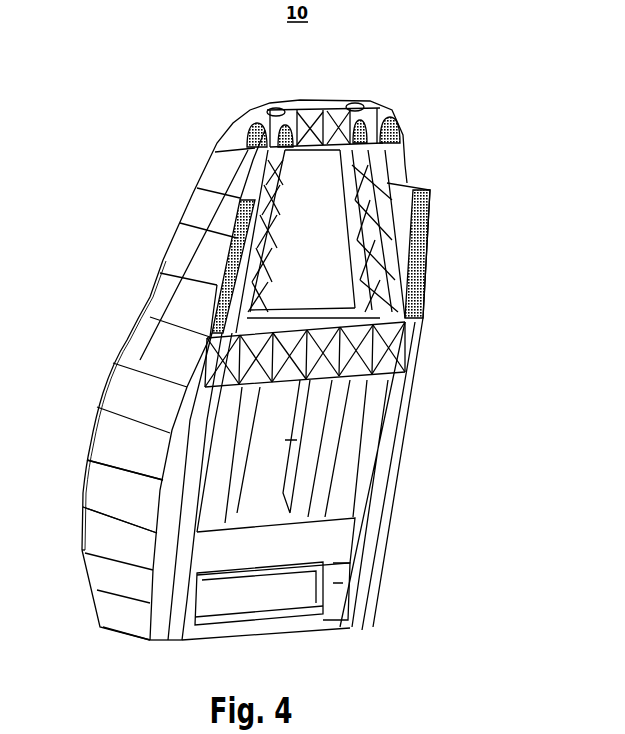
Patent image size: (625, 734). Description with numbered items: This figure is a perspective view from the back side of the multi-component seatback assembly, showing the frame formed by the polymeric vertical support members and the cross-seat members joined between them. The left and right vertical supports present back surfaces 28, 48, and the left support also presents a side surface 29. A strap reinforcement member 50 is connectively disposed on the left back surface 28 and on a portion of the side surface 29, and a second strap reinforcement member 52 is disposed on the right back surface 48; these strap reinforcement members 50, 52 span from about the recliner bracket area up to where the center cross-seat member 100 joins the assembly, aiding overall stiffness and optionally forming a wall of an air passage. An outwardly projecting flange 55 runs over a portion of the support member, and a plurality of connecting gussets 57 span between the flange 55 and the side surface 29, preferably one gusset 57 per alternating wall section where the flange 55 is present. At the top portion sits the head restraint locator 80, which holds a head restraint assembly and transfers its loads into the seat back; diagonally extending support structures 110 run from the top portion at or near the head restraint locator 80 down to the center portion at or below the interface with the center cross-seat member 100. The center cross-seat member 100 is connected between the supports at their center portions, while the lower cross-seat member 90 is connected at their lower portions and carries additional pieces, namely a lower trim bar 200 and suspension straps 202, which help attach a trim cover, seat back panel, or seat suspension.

The back surface 28 is at (173, 263).
The side surface 29 is at (113, 510).
The back surface 48 is at (418, 310).
The strap reinforcement member 50 is at (177, 638).
The strap reinforcement member 52 is at (373, 628).
The outwardly projecting flange 55 is at (83, 533).
The connecting gussets 57 is at (173, 308).
The head restraint locator 80 is at (277, 112).
The lower cross-seat member 90 is at (333, 542).
The center cross-seat member 100 is at (397, 365).
The diagonally extending support structure 110 is at (250, 143).
The lower trim bar 200 is at (253, 628).
The suspension straps 202 is at (313, 460).